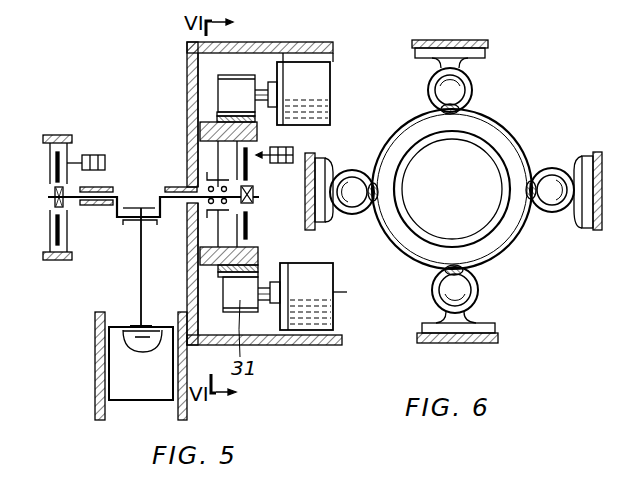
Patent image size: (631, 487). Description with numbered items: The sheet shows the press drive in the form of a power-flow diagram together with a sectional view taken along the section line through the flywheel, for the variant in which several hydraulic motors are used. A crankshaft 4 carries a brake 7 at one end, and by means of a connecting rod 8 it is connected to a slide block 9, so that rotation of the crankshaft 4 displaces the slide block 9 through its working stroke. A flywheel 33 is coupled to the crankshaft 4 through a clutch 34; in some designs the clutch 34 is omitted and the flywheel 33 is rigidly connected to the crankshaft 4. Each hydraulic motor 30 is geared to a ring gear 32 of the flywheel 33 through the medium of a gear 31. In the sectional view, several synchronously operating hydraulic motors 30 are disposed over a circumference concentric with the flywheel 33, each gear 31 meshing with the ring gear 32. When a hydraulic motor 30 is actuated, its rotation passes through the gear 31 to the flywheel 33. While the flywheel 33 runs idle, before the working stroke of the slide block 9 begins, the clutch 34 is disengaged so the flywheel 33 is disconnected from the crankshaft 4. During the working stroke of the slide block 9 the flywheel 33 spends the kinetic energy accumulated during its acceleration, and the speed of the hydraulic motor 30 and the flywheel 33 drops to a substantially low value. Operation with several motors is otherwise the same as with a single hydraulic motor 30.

In FIG. 5, the crankshaft 4 is at (138, 216).
In FIG. 5, the brake 7 is at (68, 239).
In FIG. 5, the connecting rod 8 is at (140, 291).
In FIG. 5, the slide block 9 is at (154, 394).
In FIG. 5, the hydraulic motor 30 is at (323, 74).
In FIG. 6, the hydraulic motor 30 is at (471, 84).
In FIG. 5, the gear 31 is at (200, 78).
In FIG. 5, the ring gear 32 is at (196, 98).
In FIG. 6, the ring gear 32 is at (518, 236).
In FIG. 5, the flywheel 33 is at (204, 128).
In FIG. 6, the flywheel 33 is at (490, 244).
In FIG. 5, the clutch 34 is at (250, 168).